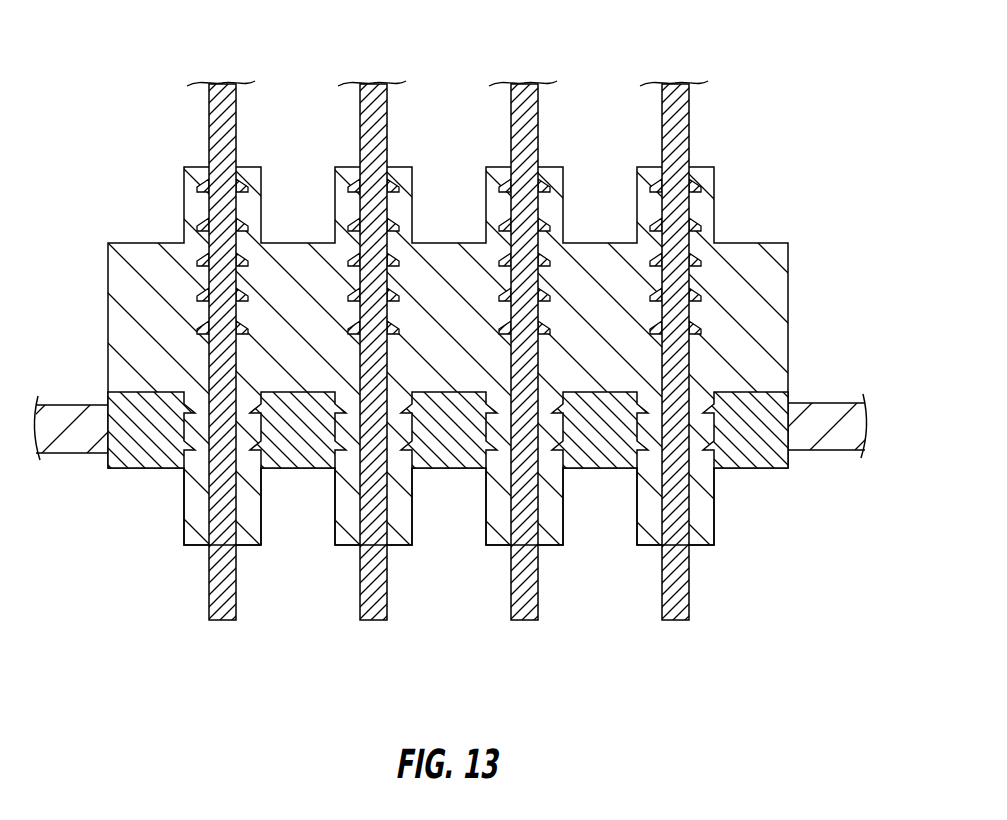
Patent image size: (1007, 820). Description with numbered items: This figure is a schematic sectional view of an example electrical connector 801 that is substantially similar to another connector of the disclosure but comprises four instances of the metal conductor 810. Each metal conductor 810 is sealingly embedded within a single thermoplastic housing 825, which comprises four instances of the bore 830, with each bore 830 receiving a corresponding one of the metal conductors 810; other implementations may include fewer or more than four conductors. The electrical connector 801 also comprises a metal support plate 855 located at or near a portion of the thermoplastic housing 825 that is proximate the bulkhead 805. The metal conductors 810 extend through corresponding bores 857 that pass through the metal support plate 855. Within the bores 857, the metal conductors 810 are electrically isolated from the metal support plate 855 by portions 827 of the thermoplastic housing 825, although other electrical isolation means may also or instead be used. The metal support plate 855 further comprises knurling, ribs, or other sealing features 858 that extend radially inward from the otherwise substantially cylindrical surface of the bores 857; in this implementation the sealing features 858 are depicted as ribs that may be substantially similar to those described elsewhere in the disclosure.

The electrical connector 801 is at (177, 57).
The bulkhead 805 is at (80, 455).
The metal conductor 810 is at (209, 594).
The thermoplastic housing 825 is at (108, 342).
The portions of the thermoplastic housing 827 is at (347, 493).
The bore 830 is at (220, 543).
The metal support plate 855 is at (150, 470).
The bore 857 is at (185, 398).
The sealing features 858 is at (497, 453).